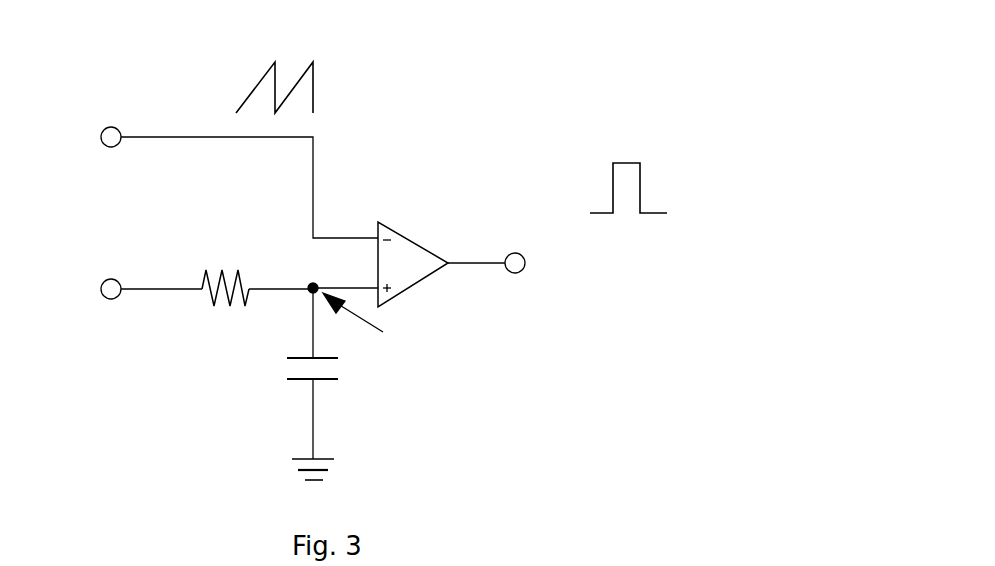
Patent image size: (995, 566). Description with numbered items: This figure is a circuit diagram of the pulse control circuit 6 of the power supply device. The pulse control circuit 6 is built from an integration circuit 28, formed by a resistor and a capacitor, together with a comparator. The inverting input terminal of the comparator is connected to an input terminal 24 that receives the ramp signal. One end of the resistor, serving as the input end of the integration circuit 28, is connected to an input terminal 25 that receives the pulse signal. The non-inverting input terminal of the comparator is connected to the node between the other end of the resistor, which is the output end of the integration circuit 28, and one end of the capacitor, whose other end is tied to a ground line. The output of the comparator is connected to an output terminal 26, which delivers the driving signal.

The pulse control circuit 6 is at (434, 88).
The input terminal 24 is at (112, 148).
The input terminal 25 is at (112, 279).
The output terminal 26 is at (517, 273).
The integration circuit 28 is at (233, 361).